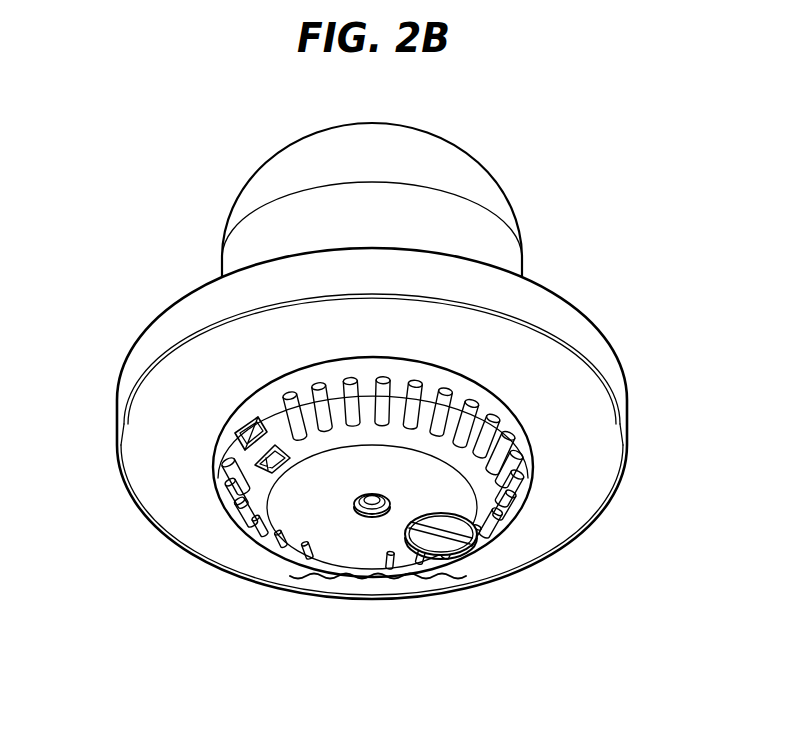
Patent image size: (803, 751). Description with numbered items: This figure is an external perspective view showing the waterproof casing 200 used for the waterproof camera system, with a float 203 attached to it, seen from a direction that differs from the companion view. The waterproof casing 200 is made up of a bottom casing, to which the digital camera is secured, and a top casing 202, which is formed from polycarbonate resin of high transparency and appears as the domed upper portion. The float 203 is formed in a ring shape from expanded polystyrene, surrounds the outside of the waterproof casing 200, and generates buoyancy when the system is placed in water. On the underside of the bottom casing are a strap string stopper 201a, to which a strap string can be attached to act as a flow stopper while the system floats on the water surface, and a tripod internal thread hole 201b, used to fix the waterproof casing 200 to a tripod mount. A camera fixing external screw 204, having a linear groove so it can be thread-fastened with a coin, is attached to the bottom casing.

The waterproof casing 200 is at (414, 103).
The strap string stopper 201a is at (244, 447).
The tripod internal thread hole 201b is at (365, 518).
The top casing 202 is at (503, 202).
The float 203 is at (593, 352).
The camera fixing external screw 204 is at (441, 541).